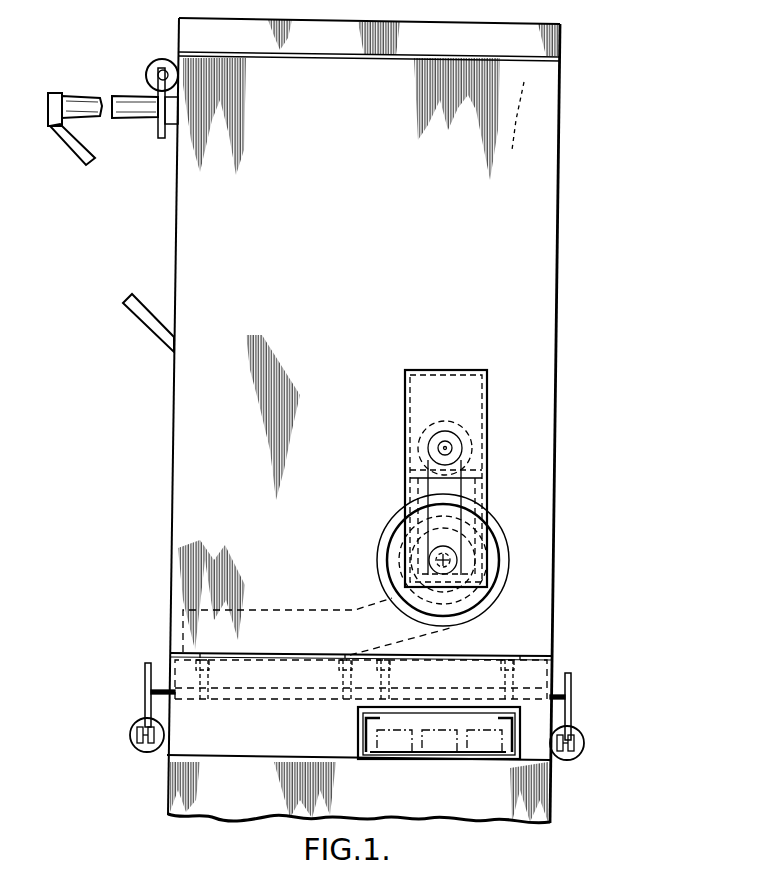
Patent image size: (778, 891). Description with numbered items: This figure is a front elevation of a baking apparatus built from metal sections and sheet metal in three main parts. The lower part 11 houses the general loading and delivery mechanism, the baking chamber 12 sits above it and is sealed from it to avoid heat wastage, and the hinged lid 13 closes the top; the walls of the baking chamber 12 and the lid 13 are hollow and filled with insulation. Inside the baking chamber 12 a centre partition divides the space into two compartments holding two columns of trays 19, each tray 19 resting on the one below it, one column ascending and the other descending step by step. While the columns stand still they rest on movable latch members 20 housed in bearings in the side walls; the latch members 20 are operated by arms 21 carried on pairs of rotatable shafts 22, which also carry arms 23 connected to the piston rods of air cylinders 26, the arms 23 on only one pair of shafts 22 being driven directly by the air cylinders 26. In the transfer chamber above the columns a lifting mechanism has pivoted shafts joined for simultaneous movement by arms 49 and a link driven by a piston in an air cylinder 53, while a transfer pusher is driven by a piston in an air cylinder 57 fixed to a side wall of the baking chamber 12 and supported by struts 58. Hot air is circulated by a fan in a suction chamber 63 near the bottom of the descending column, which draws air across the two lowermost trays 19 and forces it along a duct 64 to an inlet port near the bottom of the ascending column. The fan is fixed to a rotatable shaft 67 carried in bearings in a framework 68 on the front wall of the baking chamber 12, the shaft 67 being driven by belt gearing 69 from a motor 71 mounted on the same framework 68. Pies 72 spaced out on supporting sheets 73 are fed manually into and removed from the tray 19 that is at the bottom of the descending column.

The lower part 11 is at (203, 786).
The baking chamber 12 is at (527, 270).
The hinged lid 13 is at (526, 42).
The trays 19 is at (358, 731).
The latch members 20 is at (200, 654).
The arms 21 is at (207, 683).
The rotatable shafts 22 is at (268, 692).
The arms 23 is at (147, 690).
The air cylinders 26 is at (133, 746).
The arms 49 is at (162, 118).
The air cylinder 53 is at (160, 72).
The air cylinder 57 is at (80, 108).
The struts 58 is at (77, 146).
The suction chamber 63 is at (396, 560).
The duct 64 is at (280, 622).
The rotatable shaft 67 is at (458, 560).
The framework 68 is at (472, 490).
The belt gearing 69 is at (420, 490).
The motor 71 is at (488, 448).
The pies 72 is at (439, 768).
The supporting sheets 73 is at (426, 755).